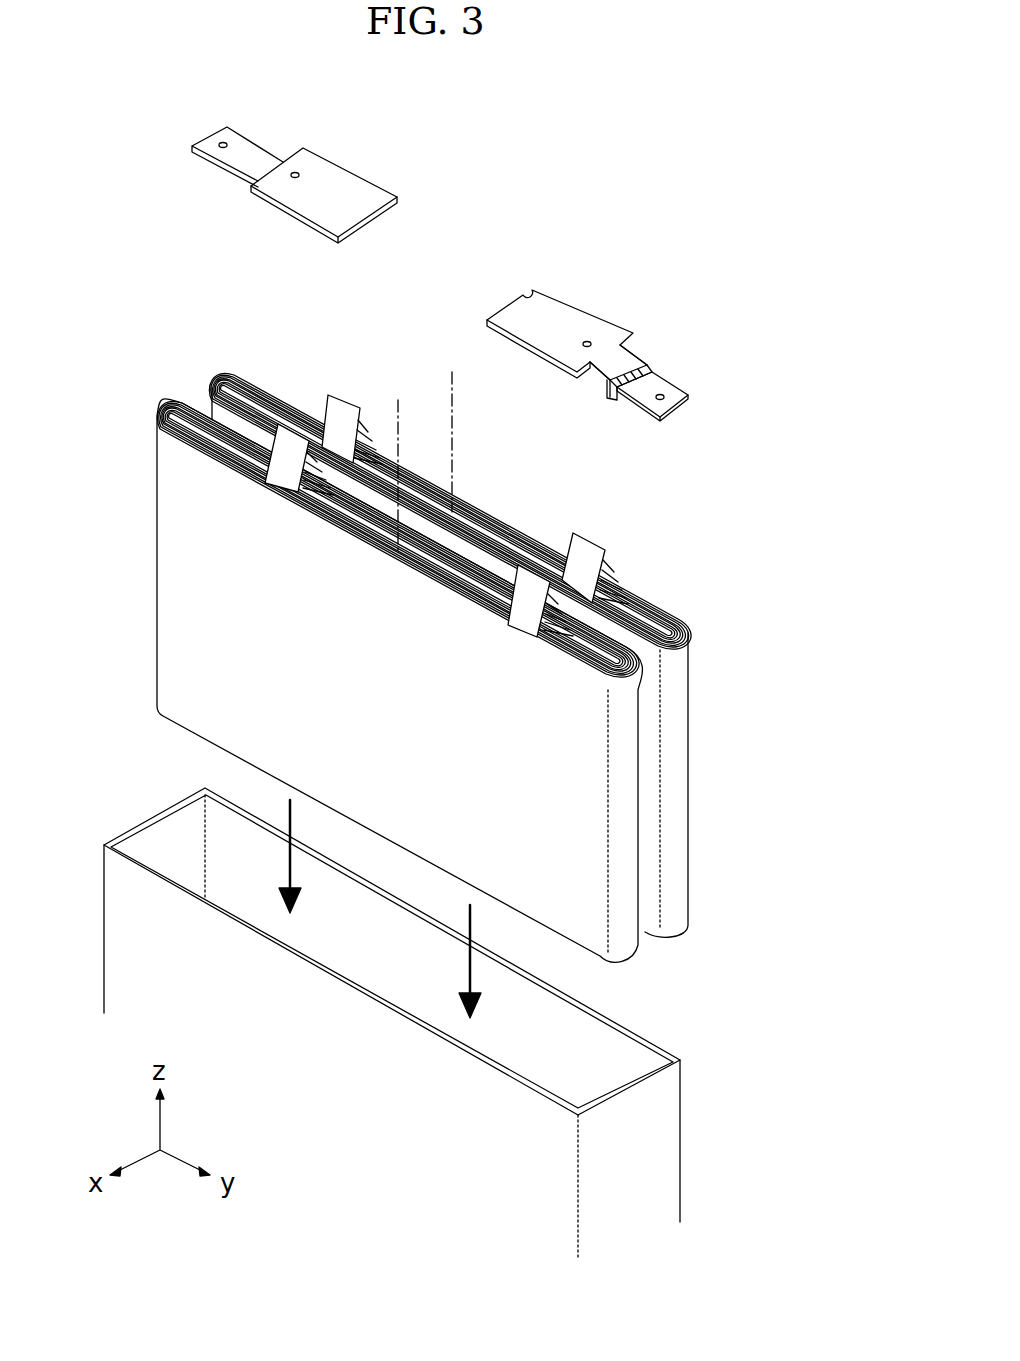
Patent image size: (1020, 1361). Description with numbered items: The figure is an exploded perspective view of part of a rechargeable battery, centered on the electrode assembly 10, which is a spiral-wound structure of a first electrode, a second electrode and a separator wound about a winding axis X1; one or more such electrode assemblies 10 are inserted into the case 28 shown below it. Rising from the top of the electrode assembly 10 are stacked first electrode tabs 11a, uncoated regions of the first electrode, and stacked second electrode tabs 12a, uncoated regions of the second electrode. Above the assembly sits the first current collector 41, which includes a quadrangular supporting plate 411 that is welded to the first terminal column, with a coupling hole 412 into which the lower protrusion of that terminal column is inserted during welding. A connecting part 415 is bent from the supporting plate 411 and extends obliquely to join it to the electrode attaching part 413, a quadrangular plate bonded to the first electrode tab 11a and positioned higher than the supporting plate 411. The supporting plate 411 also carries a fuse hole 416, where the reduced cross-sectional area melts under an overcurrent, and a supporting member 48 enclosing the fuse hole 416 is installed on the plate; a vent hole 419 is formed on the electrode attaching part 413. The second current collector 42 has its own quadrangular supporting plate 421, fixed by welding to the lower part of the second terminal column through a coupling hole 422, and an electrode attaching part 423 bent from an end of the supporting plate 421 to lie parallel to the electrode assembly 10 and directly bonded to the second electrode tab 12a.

The electrode assembly 10 is at (697, 768).
The first electrode tab 11a is at (537, 612).
The second electrode tab 12a is at (289, 444).
The winding axis X1 is at (452, 372).
The case 28 is at (670, 1137).
The first current collector 41 is at (682, 381).
The supporting plate 411 is at (686, 392).
The coupling hole 412 is at (665, 398).
The electrode attaching part 413 is at (547, 298).
The connecting part 415 is at (614, 356).
The fuse hole 416 is at (598, 393).
The vent hole 419 is at (586, 339).
The supporting member 48 is at (646, 366).
The second current collector 42 is at (233, 129).
The supporting plate 421 is at (197, 143).
The coupling hole 422 is at (222, 139).
The electrode attaching part 423 is at (362, 190).